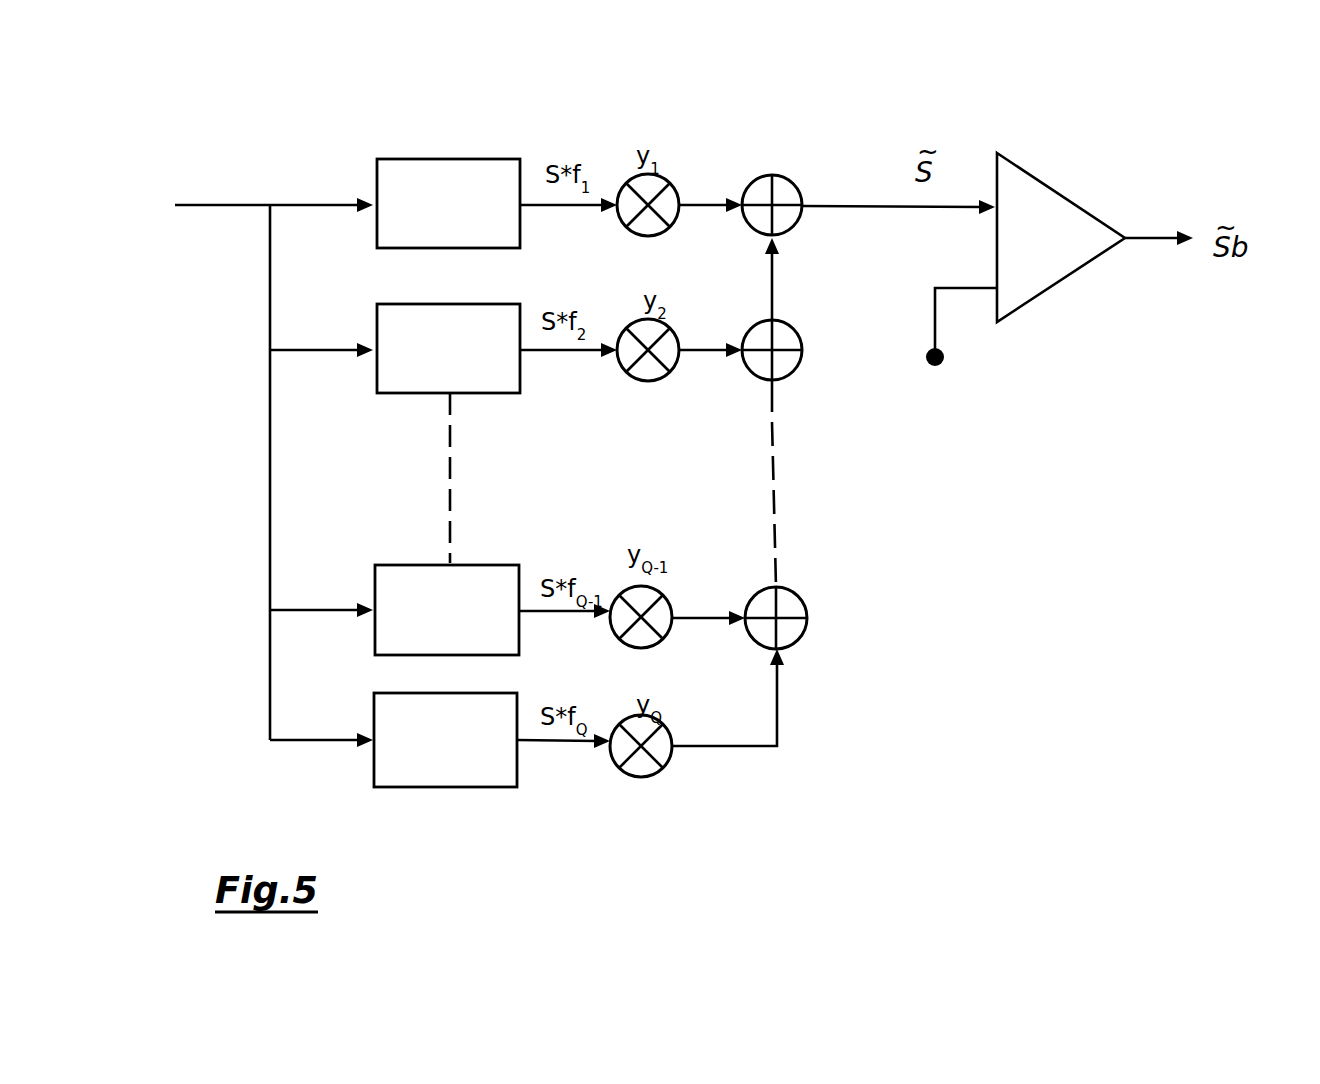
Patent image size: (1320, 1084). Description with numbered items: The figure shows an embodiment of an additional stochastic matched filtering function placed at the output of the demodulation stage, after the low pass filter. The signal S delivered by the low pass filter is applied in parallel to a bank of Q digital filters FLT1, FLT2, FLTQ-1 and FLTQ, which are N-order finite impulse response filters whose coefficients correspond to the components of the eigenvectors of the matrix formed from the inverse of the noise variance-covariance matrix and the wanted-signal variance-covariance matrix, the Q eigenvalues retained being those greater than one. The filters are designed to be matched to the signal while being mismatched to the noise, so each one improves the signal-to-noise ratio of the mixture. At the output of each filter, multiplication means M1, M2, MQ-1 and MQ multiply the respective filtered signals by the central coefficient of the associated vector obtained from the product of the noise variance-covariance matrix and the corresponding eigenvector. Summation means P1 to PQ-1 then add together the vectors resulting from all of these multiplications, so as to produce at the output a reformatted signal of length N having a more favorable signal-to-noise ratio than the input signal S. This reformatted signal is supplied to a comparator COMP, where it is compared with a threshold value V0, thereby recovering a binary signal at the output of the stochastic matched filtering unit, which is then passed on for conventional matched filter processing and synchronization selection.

The signal S is at (254, 468).
The filter FLT1 is at (450, 159).
The filter FLT2 is at (450, 304).
The filter FLTQ-1 is at (447, 565).
The filter FLTQ is at (445, 693).
The multiplication means M1 is at (647, 237).
The multiplication means M2 is at (648, 382).
The multiplication means MQ-1 is at (683, 622).
The multiplication means MQ is at (632, 778).
The summation means P1 is at (773, 176).
The summation means PQ-1 is at (798, 590).
The comparator COMP is at (1062, 193).
The threshold value V0 is at (961, 353).